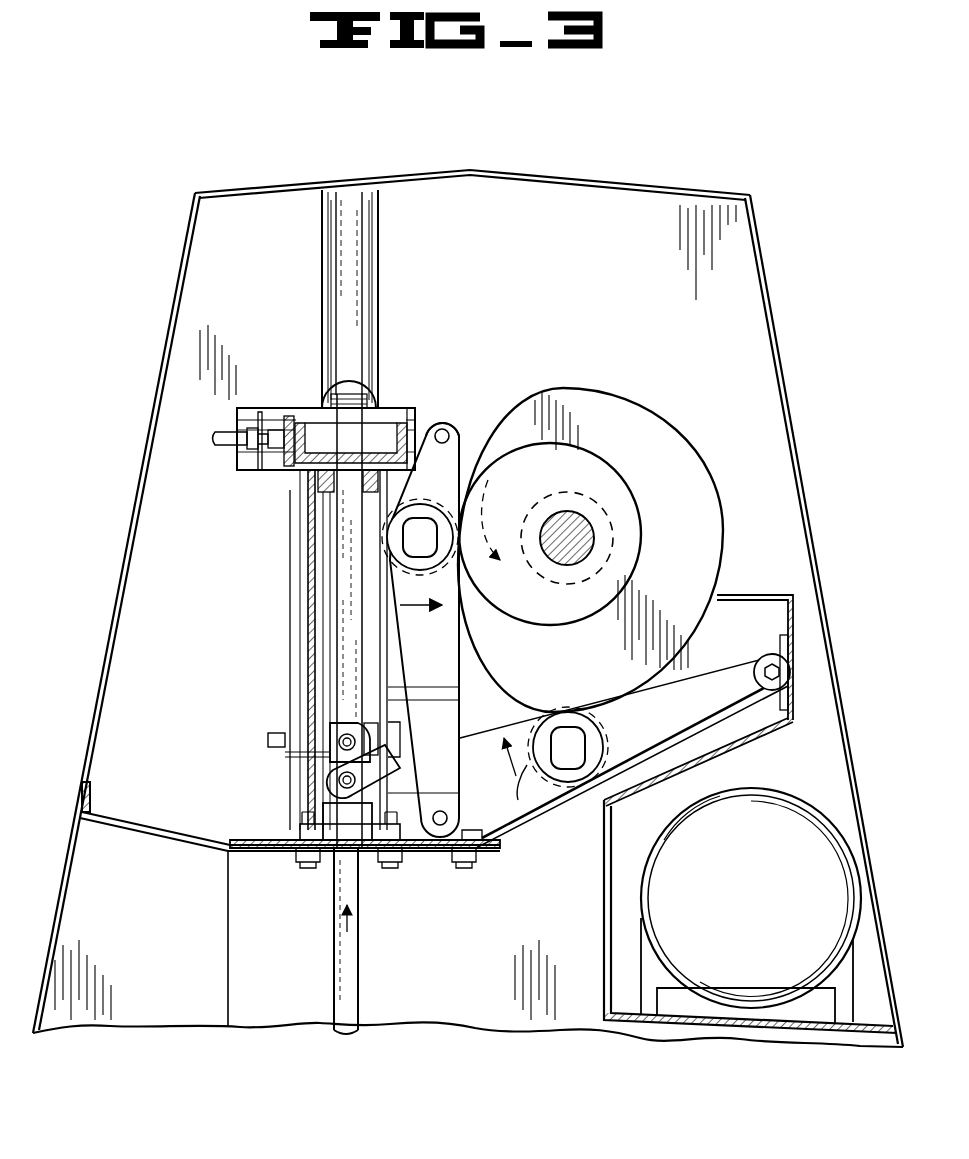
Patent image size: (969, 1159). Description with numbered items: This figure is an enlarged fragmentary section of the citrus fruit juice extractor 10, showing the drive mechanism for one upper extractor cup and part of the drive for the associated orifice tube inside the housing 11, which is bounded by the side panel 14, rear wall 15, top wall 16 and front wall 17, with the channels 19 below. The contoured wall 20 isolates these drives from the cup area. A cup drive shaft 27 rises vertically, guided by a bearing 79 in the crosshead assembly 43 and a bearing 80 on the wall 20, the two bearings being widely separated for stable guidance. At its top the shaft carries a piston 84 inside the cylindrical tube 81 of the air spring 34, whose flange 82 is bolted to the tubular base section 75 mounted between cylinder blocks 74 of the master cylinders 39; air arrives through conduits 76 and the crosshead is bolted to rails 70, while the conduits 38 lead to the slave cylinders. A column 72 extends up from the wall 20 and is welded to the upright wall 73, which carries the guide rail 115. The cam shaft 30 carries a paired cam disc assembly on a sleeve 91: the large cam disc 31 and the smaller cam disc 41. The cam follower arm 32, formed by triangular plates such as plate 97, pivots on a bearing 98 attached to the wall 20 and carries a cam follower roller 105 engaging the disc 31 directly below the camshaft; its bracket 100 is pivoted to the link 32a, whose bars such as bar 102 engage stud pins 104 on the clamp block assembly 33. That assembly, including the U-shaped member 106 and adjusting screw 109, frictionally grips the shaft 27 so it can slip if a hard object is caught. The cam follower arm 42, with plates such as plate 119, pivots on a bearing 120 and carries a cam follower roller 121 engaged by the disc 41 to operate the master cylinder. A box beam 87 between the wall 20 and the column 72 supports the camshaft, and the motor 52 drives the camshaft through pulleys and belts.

The citrus fruit juice extractor 10 is at (714, 162).
The housing 11 is at (768, 285).
The side panel 14 is at (574, 282).
The rear wall 15 is at (85, 737).
The top wall 16 is at (480, 170).
The front wall 17 is at (852, 770).
The channels 19 is at (434, 954).
The contoured wall 20 is at (138, 820).
The cup drive shaft 27 is at (332, 940).
The cam shaft 30 is at (556, 568).
The cam disc 31 is at (644, 455).
The cam follower arm 32 is at (602, 704).
The link 32a is at (328, 773).
The clamp block assembly 33 is at (388, 742).
The air spring 34 is at (318, 272).
The conduit 38 is at (217, 438).
The master cylinder 39 is at (246, 456).
The cam disc 41 is at (628, 522).
The cam follower arm 42 is at (464, 664).
The crosshead assembly 43 is at (400, 410).
The motor 52 is at (768, 896).
The rails 70 is at (432, 418).
The column 72 is at (384, 652).
The upright wall 73 is at (308, 554).
The cylinder block 74 is at (260, 466).
The tubular base section 75 is at (320, 478).
The conduit 76 is at (288, 428).
The bearing 79 is at (318, 497).
The bearing 80 is at (335, 819).
The cylindrical tube 81 is at (382, 248).
The flange 82 is at (278, 430).
The piston 84 is at (372, 412).
The box beam 87 is at (736, 596).
The sleeve 91 is at (603, 502).
The triangular plate 97 is at (627, 755).
The bearing 98 is at (764, 660).
The bracket 100 is at (333, 792).
The bar 102 is at (330, 754).
The stud pin 104 is at (337, 740).
The cam follower roller 105 is at (541, 762).
The U-shaped member 106 is at (378, 727).
The adjusting screw 109 is at (268, 735).
The guide rail 115 is at (298, 576).
The plate 119 is at (446, 630).
The bearing 120 is at (440, 838).
The cam follower roller 121 is at (462, 503).